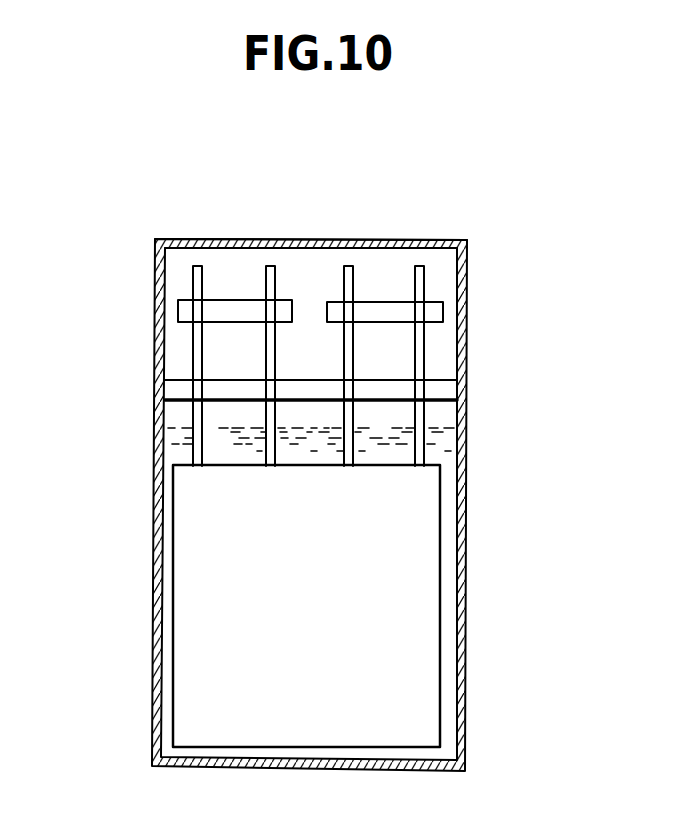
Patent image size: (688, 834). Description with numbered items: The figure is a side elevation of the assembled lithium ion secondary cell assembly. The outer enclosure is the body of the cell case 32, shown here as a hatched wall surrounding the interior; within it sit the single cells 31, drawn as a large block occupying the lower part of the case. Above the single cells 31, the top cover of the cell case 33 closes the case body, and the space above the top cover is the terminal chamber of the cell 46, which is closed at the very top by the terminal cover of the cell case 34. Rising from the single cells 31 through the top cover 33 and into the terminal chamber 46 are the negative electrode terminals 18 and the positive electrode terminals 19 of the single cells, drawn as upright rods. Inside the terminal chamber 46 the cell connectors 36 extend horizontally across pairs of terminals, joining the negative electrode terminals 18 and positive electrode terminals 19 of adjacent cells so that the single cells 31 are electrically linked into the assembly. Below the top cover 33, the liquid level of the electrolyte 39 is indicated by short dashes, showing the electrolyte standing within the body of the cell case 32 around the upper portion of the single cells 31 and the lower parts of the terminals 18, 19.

The negative electrode terminals 18 is at (193, 343).
The positive electrode terminals 19 is at (347, 267).
The single cells 31 is at (207, 676).
The body of the cell case 32 is at (154, 573).
The top cover of the cell case 33 is at (223, 392).
The terminal cover of the cell case 34 is at (203, 239).
The cell connectors 36 is at (238, 300).
The liquid level of the electrolyte 39 is at (380, 428).
The terminal chamber of the cell 46 is at (447, 273).